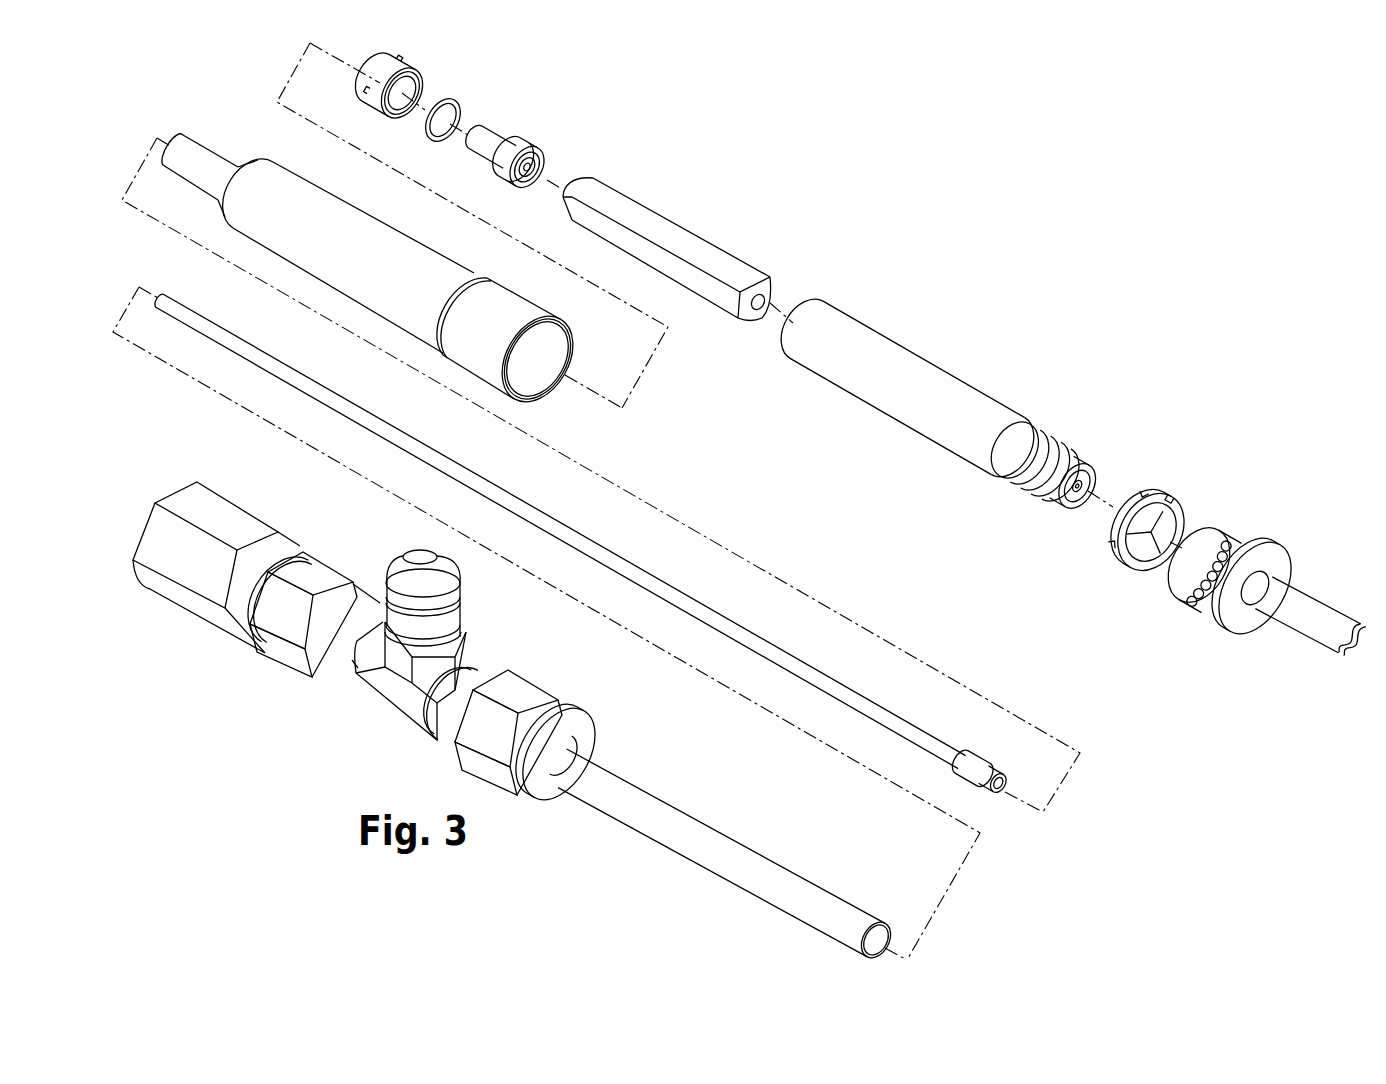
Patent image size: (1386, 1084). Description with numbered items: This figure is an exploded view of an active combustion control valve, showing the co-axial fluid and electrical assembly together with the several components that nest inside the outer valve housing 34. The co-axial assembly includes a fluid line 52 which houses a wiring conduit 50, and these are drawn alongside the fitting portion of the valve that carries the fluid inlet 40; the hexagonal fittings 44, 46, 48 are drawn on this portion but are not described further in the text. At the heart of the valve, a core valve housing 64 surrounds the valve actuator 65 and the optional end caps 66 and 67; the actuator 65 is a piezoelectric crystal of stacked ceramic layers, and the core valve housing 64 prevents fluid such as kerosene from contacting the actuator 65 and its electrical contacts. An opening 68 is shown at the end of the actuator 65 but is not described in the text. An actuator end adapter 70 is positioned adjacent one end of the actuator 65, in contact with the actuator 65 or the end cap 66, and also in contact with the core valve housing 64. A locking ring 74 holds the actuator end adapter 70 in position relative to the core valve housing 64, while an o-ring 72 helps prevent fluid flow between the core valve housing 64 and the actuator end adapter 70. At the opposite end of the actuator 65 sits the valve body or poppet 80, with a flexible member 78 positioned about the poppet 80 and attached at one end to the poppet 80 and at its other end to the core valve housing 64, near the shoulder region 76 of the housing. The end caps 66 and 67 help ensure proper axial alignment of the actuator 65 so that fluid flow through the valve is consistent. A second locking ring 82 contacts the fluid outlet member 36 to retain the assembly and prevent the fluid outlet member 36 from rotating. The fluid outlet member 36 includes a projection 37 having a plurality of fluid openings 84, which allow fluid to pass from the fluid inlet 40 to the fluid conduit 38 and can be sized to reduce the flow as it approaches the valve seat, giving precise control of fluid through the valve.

The outer valve housing 34 is at (287, 192).
The fluid outlet member 36 is at (1260, 543).
The projection 37 is at (1199, 527).
The fluid conduit 38 is at (1317, 613).
The fluid inlet 40 is at (430, 618).
The nut 44 is at (532, 693).
The nut 46 is at (295, 632).
The nut 48 is at (208, 573).
The wiring conduit 50 is at (730, 632).
The fluid line 52 is at (703, 843).
The core valve housing 64 is at (954, 406).
The valve actuator 65 is at (702, 225).
The end cap 66 is at (578, 178).
The end cap 67 is at (770, 283).
The hole 68 is at (767, 302).
The actuator end adapter 70 is at (524, 148).
The o-ring 72 is at (455, 100).
The locking ring 74 is at (404, 67).
The shoulder 76 is at (1002, 452).
The flexible member 78 is at (1035, 462).
The poppet 80 is at (1077, 486).
The locking ring 82 is at (1155, 493).
The fluid openings 84 is at (1207, 543).